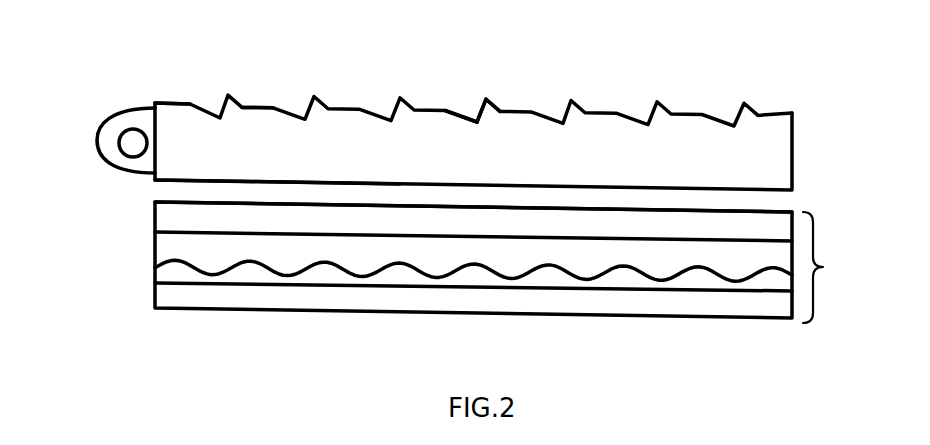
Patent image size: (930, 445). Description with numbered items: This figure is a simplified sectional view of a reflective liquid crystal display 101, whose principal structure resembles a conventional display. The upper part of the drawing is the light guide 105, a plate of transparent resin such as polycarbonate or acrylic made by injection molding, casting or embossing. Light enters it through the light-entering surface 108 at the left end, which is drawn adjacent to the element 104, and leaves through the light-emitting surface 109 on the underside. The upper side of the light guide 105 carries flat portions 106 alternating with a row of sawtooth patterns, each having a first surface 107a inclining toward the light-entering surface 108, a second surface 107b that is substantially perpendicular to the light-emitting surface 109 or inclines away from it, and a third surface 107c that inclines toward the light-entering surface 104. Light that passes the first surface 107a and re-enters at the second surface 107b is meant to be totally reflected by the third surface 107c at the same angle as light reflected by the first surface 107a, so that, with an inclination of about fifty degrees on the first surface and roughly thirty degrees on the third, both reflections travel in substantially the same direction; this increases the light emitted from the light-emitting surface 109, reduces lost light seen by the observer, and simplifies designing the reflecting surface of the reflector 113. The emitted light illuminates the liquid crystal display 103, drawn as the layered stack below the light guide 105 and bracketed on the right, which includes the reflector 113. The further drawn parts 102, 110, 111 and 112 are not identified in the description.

The reflective liquid crystal display 101 is at (381, 363).
The light guide plate 102 is at (515, 146).
The liquid crystal display 103 is at (530, 262).
The light-entering surface 104 is at (115, 110).
The light guide 105 is at (672, 137).
The flat portions 106 is at (262, 106).
The first surface 107a is at (463, 110).
The second surface 107b is at (481, 100).
The third surface 107c is at (487, 100).
The light-entering surface 108 is at (163, 107).
The light-emitting surface 109 is at (235, 181).
The upper diffusion sheet 110 is at (155, 216).
The lower diffusion sheet 111 is at (155, 295).
The prism sheet layer 112 is at (163, 248).
The reflector 113 is at (173, 272).